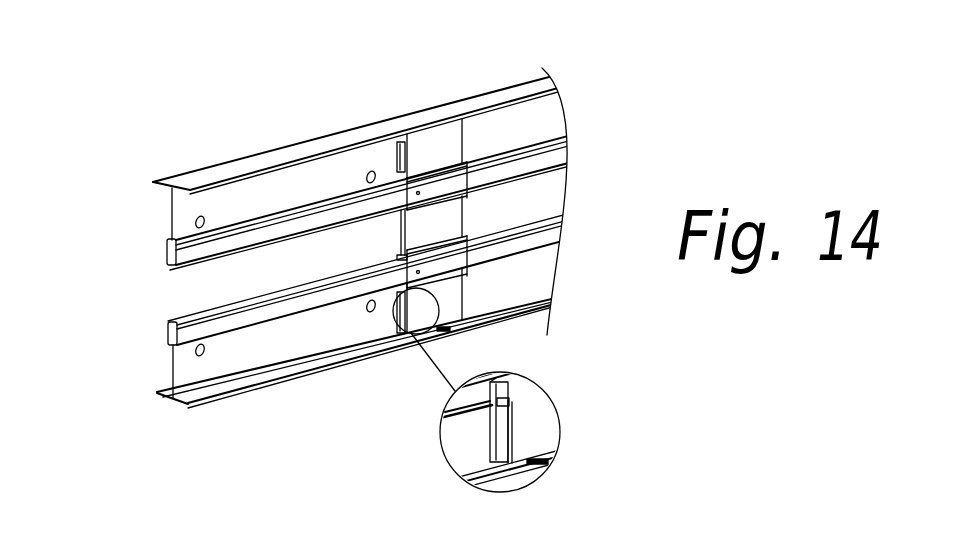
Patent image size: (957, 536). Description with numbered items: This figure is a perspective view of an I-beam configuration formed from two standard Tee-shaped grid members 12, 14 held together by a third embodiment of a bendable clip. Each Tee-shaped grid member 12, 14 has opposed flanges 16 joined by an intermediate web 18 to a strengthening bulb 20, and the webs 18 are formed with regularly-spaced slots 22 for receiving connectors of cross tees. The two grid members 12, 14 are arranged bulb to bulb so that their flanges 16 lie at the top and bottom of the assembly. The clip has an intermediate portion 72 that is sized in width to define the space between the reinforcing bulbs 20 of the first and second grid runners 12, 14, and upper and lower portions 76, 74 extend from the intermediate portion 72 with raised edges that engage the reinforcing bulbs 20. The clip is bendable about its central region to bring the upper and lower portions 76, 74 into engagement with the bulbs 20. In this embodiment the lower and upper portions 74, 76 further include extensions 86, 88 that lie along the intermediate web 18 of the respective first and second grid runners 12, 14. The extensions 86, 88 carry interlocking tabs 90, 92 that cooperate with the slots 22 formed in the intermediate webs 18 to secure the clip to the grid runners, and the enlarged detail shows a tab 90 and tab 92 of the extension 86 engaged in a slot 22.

The Tee-shaped grid member 12 is at (183, 366).
The Tee-shaped grid member 14 is at (178, 221).
The flange 16 is at (153, 182).
The intermediate web 18 is at (316, 195).
The strengthening bulb 20 is at (167, 256).
The slot 22 is at (490, 409).
The intermediate portion 72 is at (446, 240).
The lower portion 74 is at (450, 263).
The upper portion 76 is at (457, 181).
The extension 86 is at (456, 311).
The extension 88 is at (446, 160).
The interlocking tab 90 is at (400, 143).
The interlocking tab 92 is at (509, 402).